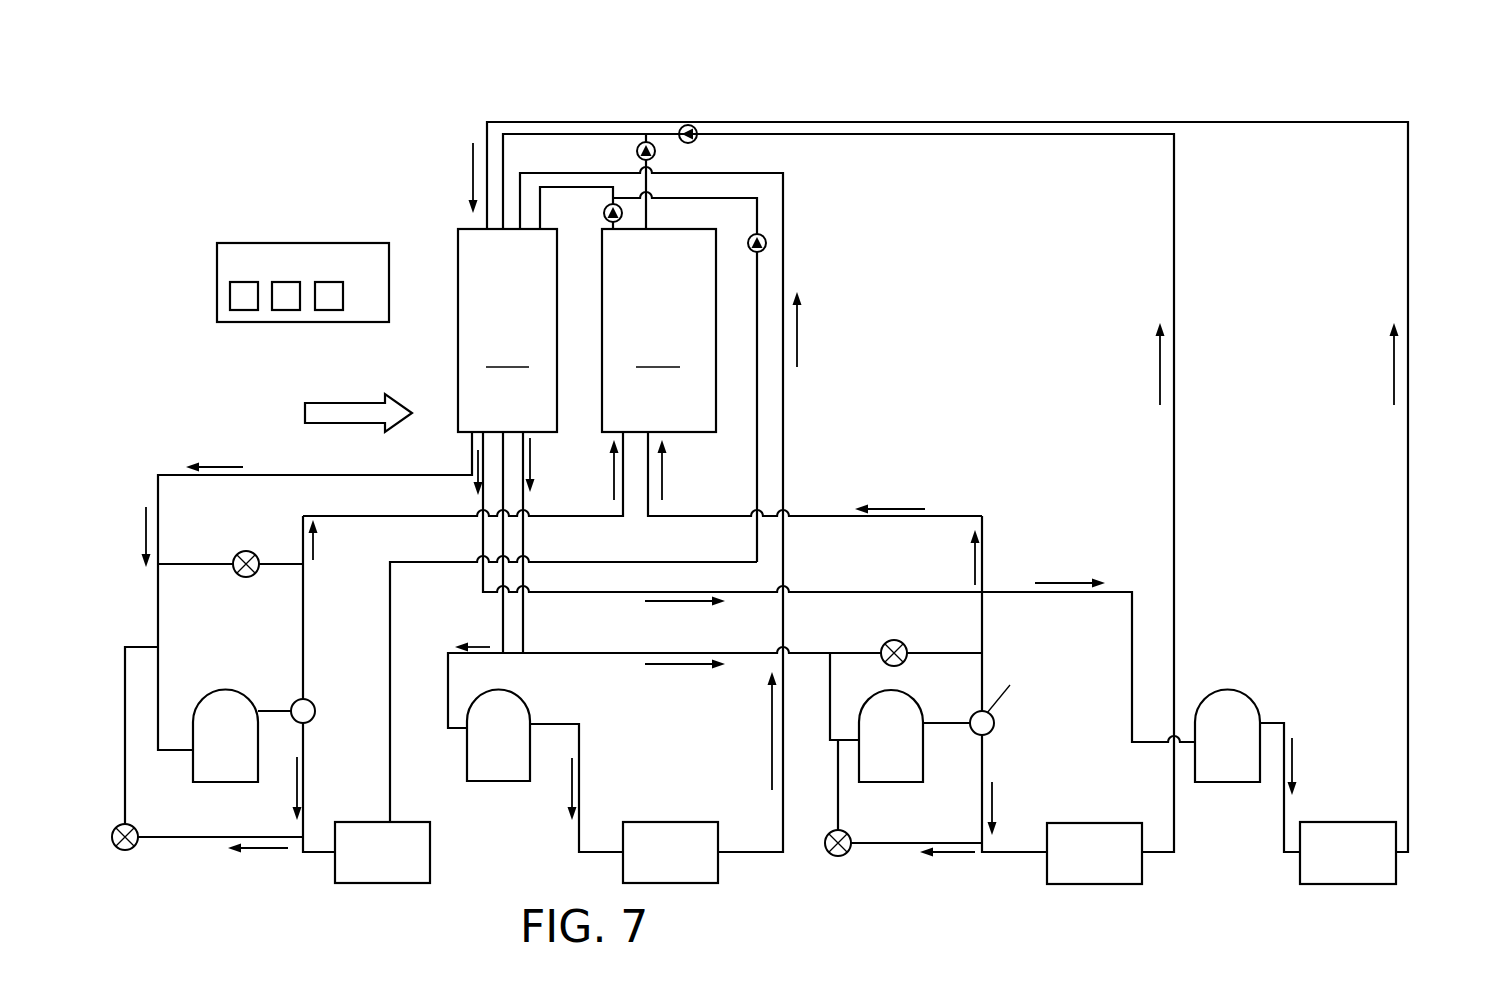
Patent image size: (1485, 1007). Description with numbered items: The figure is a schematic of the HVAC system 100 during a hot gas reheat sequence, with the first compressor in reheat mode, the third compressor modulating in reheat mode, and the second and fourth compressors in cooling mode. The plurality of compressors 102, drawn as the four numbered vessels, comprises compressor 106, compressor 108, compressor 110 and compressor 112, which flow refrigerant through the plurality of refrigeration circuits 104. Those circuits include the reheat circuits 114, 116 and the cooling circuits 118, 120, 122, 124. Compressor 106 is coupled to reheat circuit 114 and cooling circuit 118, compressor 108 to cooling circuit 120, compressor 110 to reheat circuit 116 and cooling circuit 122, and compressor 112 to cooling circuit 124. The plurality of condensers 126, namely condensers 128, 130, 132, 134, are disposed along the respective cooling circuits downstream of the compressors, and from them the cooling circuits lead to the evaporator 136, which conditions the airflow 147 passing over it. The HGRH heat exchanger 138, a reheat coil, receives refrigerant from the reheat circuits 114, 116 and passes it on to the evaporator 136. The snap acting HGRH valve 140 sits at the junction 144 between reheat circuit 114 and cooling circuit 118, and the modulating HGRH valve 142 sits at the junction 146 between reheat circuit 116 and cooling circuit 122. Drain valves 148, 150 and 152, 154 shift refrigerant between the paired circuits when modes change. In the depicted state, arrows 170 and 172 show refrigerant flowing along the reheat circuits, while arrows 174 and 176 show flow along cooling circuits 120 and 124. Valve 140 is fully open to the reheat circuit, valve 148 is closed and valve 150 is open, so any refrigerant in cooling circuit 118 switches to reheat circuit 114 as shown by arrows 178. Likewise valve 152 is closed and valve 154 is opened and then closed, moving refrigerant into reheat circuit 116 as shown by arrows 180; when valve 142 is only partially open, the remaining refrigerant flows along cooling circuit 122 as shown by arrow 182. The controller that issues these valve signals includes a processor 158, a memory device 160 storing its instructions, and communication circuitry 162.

The HVAC system 100 is at (284, 164).
The plurality of compressors 102 is at (741, 716).
The plurality of refrigeration circuits 104 is at (310, 509).
The compressor 106 is at (235, 689).
The compressor 108 is at (523, 701).
The compressor 110 is at (911, 696).
The compressor 112 is at (1251, 701).
The reheat circuit 114 is at (382, 509).
The reheat circuit 116 is at (997, 544).
The cooling circuit 118 is at (436, 774).
The cooling circuit 120 is at (782, 885).
The cooling circuit 122 is at (1208, 844).
The cooling circuit 124 is at (1432, 798).
The plurality of condensers 126 is at (865, 846).
The condenser 128 is at (430, 884).
The condenser 130 is at (628, 822).
The condenser 132 is at (1102, 823).
The condenser 134 is at (1385, 884).
The evaporator 136 is at (507, 330).
The HGRH heat exchanger 138 is at (659, 330).
The HGRH valve 140 is at (316, 718).
The HGRH valve 142 is at (994, 731).
The junction 144 is at (313, 769).
The junction 146 is at (961, 753).
The airflow 147 is at (360, 426).
The valve 148 is at (238, 574).
The valve 150 is at (123, 852).
The valve 152 is at (894, 640).
The valve 154 is at (826, 840).
The processor 158 is at (285, 295).
The memory device 160 is at (286, 310).
The communication circuitry 162 is at (323, 310).
The arrows 170 is at (208, 467).
The arrows 172 is at (664, 497).
The arrows 174 is at (797, 337).
The arrows 176 is at (473, 183).
The arrows 178 is at (295, 775).
The arrows 180 is at (968, 858).
The arrow 182 is at (1160, 370).